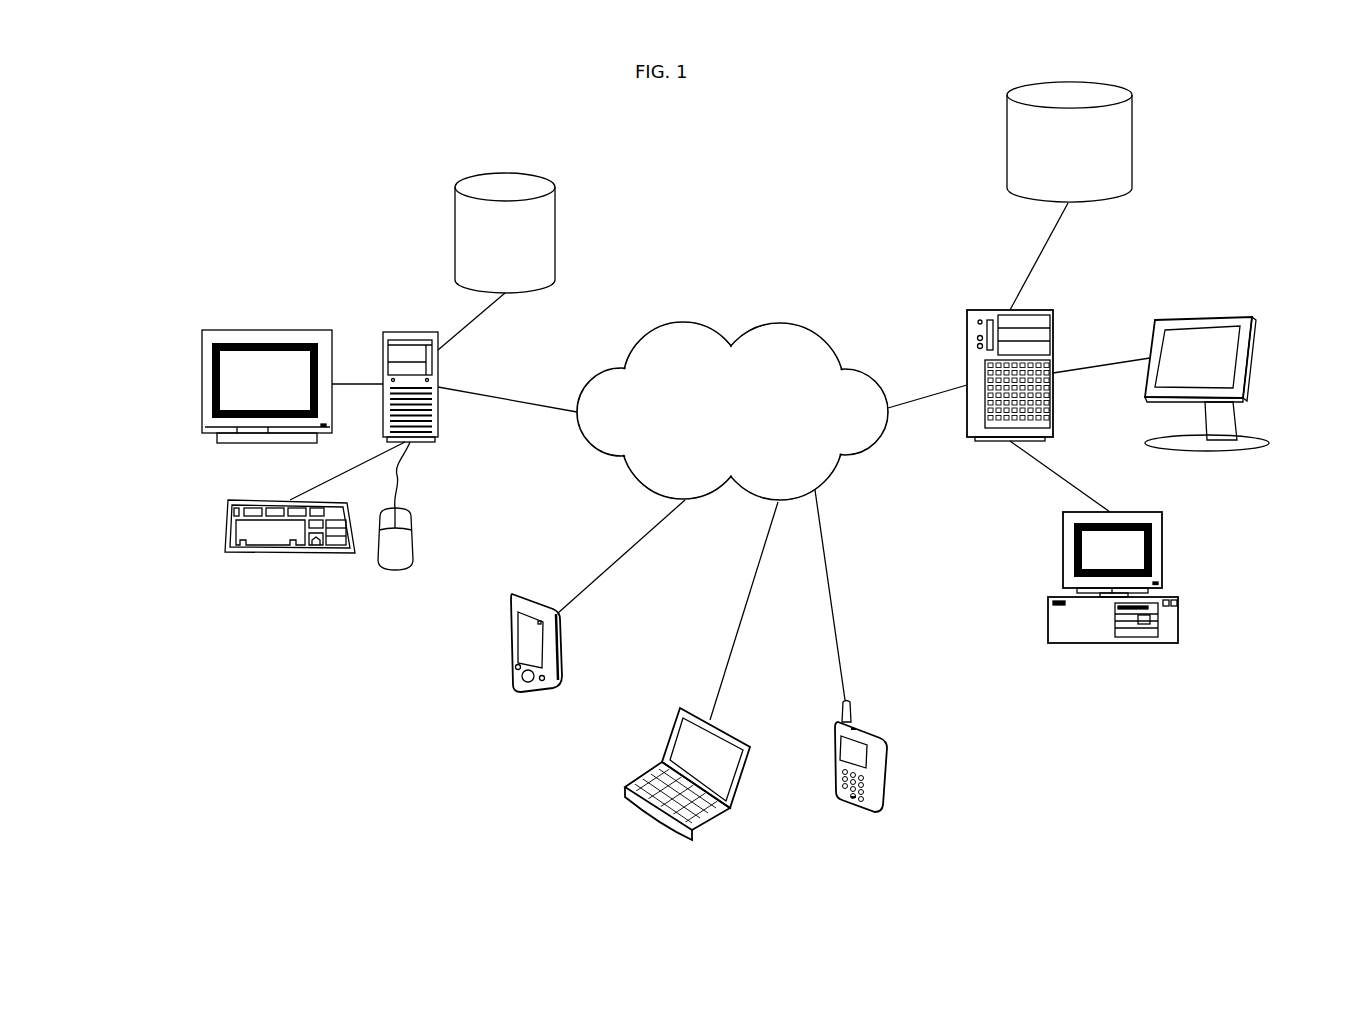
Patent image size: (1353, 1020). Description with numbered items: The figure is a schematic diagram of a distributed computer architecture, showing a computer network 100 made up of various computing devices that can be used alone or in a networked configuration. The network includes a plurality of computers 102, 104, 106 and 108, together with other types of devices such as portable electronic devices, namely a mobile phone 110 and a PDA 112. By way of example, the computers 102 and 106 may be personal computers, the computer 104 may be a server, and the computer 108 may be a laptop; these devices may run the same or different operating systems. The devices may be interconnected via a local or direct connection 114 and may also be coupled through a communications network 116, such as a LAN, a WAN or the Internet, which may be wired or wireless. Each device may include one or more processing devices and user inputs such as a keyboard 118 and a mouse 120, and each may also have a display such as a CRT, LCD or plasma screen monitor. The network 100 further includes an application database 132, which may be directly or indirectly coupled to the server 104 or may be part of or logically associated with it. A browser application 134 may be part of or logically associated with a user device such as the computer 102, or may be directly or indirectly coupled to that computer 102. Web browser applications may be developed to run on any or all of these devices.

The computer network 100 is at (708, 138).
The computer 102 is at (410, 333).
The computer 104 is at (1053, 313).
The computer 106 is at (1048, 604).
The computer 108 is at (625, 787).
The mobile phone 110 is at (887, 762).
The PDA 112 is at (512, 670).
The local or direct connection 114 is at (1055, 473).
The communications network 116 is at (772, 322).
The keyboard 118 is at (225, 520).
The mouse 120 is at (413, 528).
The application database 132 is at (1132, 148).
The browser application 134 is at (450, 208).